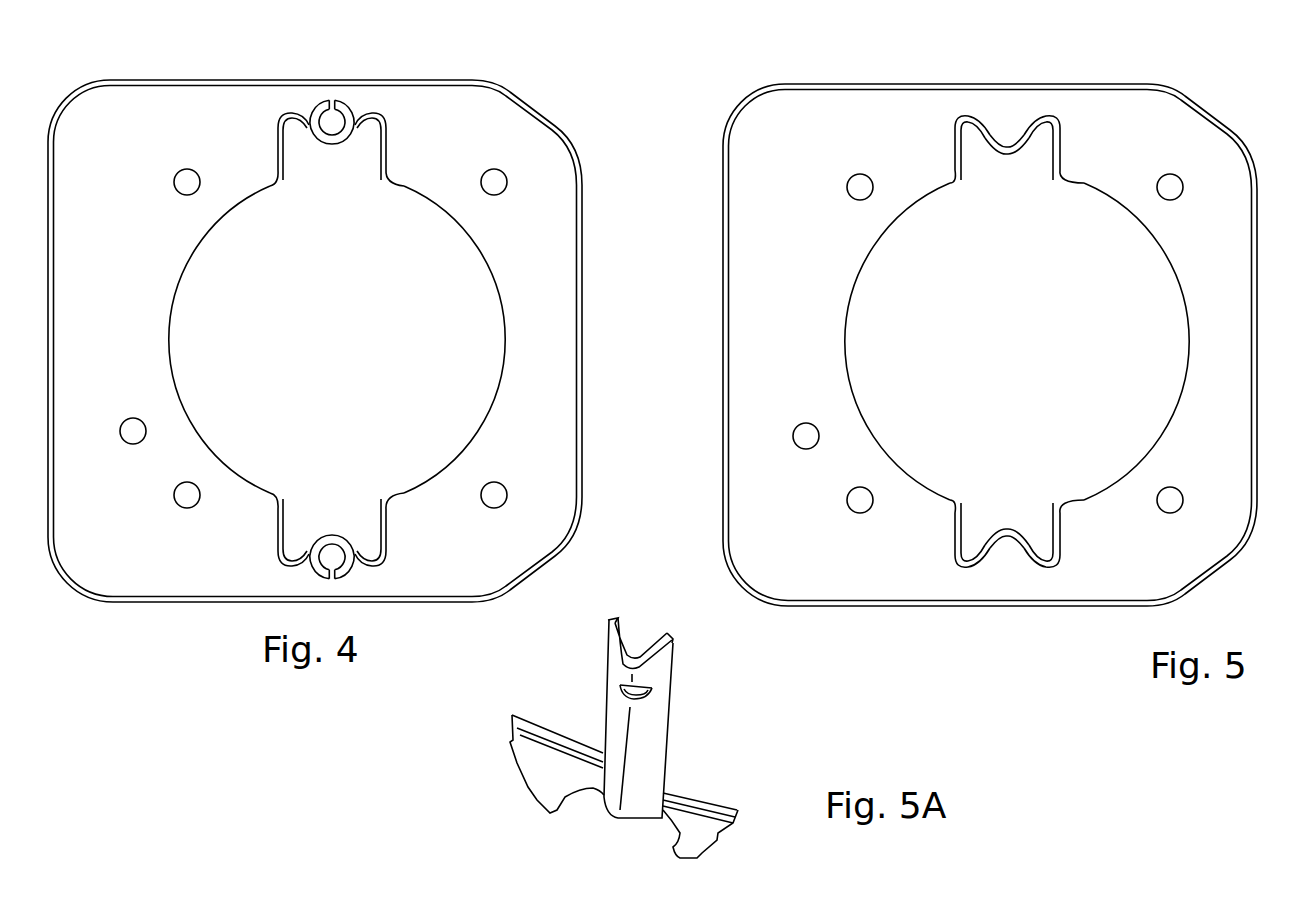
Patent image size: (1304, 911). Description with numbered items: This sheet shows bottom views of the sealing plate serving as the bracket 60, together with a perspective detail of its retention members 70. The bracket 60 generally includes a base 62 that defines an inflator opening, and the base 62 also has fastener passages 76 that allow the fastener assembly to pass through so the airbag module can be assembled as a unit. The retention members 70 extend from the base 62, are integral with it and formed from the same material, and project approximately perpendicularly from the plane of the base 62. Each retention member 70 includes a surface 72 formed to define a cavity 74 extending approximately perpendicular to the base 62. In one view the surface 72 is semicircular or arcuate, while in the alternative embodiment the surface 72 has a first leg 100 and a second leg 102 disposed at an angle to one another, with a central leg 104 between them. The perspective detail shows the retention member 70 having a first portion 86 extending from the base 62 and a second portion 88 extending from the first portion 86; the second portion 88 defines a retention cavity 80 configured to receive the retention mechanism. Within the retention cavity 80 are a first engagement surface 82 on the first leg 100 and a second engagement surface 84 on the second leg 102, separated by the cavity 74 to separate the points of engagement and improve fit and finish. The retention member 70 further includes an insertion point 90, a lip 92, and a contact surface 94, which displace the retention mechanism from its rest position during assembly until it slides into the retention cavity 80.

In FIG. 4, the bracket 60 is at (118, 113).
In FIG. 5, the bracket 60 is at (1226, 352).
In FIG. 5A, the bracket 60 is at (722, 841).
In FIG. 4, the base 62 is at (548, 411).
In FIG. 5, the base 62 is at (803, 123).
In FIG. 5A, the base 62 is at (540, 782).
In FIG. 4, the retention members 70 is at (347, 565).
In FIG. 5, the retention members 70 is at (1060, 132).
In FIG. 5A, the retention members 70 is at (610, 788).
In FIG. 5, the surface 72 is at (998, 133).
In FIG. 5, the cavity 74 is at (1003, 130).
In FIG. 4, the fastener passages 76 is at (495, 183).
In FIG. 5, the fastener passages 76 is at (1172, 186).
In FIG. 5A, the retention cavity 80 is at (630, 702).
In FIG. 5A, the first engagement surface 82 is at (617, 685).
In FIG. 5A, the second engagement surface 84 is at (653, 697).
In FIG. 5A, the first portion 86 is at (657, 785).
In FIG. 5A, the second portion 88 is at (648, 655).
In FIG. 5A, the insertion point 90 is at (615, 622).
In FIG. 5A, the lip 92 is at (619, 658).
In FIG. 5A, the contact surface 94 is at (633, 680).
In FIG. 5, the first leg 100 is at (1035, 563).
In FIG. 5A, the first leg 100 is at (605, 720).
In FIG. 5, the second leg 102 is at (968, 563).
In FIG. 5A, the second leg 102 is at (657, 777).
In FIG. 5, the central leg 104 is at (1008, 542).